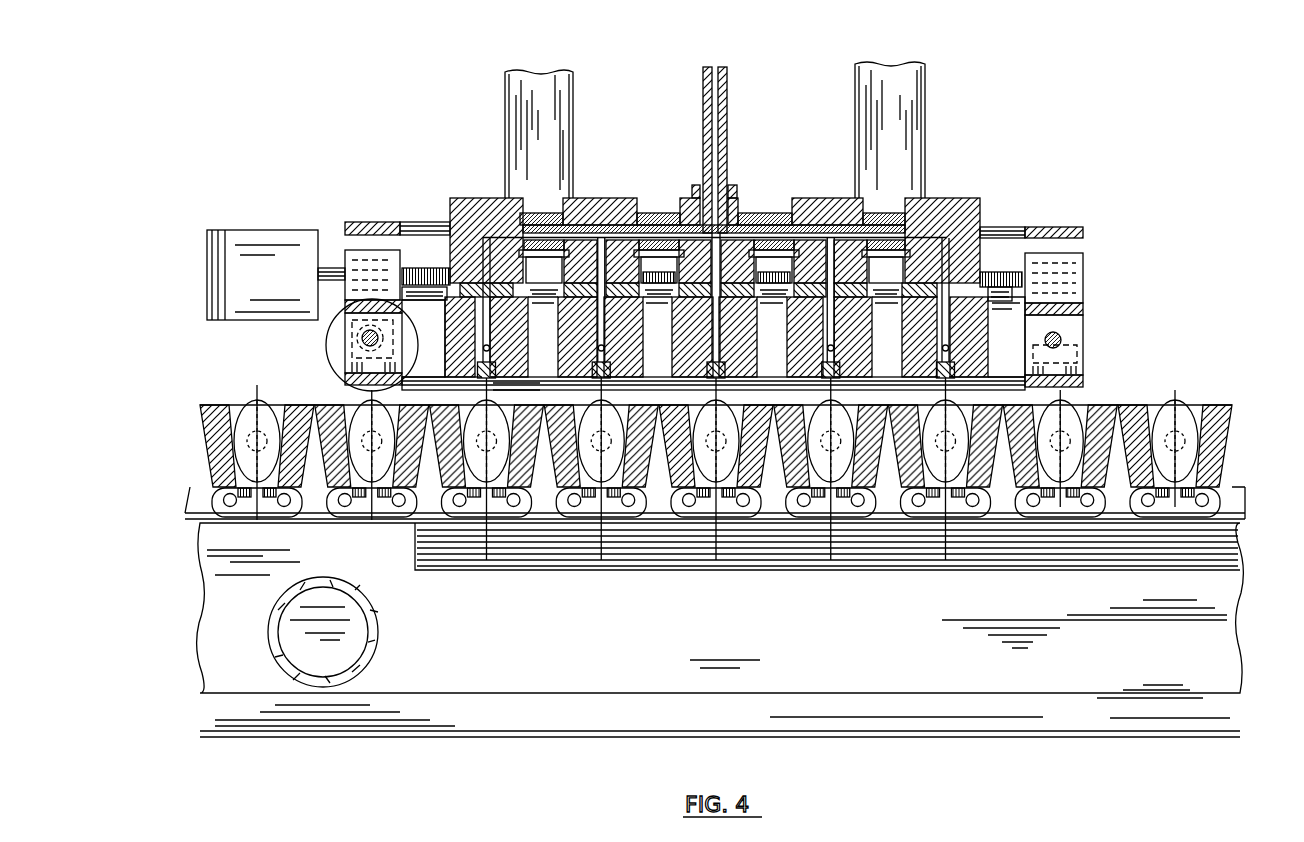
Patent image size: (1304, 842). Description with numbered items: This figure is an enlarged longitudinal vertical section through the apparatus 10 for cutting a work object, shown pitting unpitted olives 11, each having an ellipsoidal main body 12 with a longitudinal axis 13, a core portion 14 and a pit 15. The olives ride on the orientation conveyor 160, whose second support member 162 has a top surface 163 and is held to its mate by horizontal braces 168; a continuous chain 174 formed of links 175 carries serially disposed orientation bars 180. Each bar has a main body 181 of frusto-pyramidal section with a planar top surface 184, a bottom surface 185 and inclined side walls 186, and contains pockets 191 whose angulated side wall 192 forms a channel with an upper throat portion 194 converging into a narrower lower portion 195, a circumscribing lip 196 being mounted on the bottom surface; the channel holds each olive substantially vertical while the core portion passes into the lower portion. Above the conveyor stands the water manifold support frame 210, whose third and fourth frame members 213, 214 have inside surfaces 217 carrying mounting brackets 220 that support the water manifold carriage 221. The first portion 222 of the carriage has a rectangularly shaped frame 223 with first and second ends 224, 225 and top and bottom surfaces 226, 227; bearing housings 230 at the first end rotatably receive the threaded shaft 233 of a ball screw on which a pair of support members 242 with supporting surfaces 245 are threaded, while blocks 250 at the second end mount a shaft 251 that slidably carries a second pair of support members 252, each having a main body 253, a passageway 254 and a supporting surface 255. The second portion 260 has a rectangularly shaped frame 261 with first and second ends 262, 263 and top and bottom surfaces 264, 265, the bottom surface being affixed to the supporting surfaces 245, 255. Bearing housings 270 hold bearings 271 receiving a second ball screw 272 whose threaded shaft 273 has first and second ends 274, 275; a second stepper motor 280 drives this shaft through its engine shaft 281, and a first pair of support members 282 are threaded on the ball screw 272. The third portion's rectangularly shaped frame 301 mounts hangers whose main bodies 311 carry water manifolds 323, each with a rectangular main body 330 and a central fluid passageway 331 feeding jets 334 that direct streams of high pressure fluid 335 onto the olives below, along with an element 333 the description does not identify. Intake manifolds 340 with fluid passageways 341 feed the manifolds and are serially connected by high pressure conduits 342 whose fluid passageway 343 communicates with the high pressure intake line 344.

The apparatus for cutting a work object 10 is at (1084, 195).
The unpitted olive 11 is at (205, 456).
The main body 12 is at (272, 449).
The longitudinal axis 13 is at (256, 403).
The core portion 14 is at (520, 560).
The pit 15 is at (716, 503).
The orientation conveyor 160 is at (588, 535).
The second support member 162 is at (810, 649).
The top surface 163 is at (358, 520).
The braces 168 is at (368, 652).
The continuous chain 174 is at (775, 506).
The link 175 is at (400, 506).
The orientation bar 180 is at (680, 502).
The main body 181 is at (190, 486).
The top surface 184 is at (205, 404).
The bottom surface 185 is at (298, 506).
The inclined side walls 186 is at (205, 475).
The pocket 191 is at (236, 396).
The angulated side wall 192 is at (210, 444).
The throat portion 194 is at (716, 305).
The lower portion 195 is at (256, 505).
The circumscribing lip 196 is at (603, 502).
The water manifold support frame 210 is at (937, 122).
The third frame member 213 is at (925, 133).
The fourth frame member 214 is at (575, 132).
The inside surface 217 is at (520, 118).
The mounting bracket 220 is at (602, 389).
The water manifold carriage 221 is at (1092, 378).
The first portion 222 is at (430, 352).
The rectangularly shaped frame 223 is at (345, 378).
The first end 224 is at (350, 386).
The second end 225 is at (1060, 388).
The top surface 226 is at (590, 372).
The bottom surface 227 is at (657, 355).
The bearing housing 230 is at (358, 338).
The threaded shaft 233 is at (345, 360).
The support member 242 is at (352, 324).
The supporting surface 245 is at (438, 337).
The block 250 is at (1084, 350).
The shaft 251 is at (1027, 350).
The second pair of support members 252 is at (1062, 336).
The main body 253 is at (1078, 358).
The passageway 254 is at (1089, 318).
The supporting surface 255 is at (1027, 338).
The second portion 260 is at (1012, 285).
The rectangularly shaped frame 261 is at (442, 300).
The first end 262 is at (345, 262).
The second end 263 is at (1060, 320).
The top surface 264 is at (382, 266).
The bottom surface 265 is at (1000, 320).
The bearing housing 270 is at (375, 240).
The bearing 271 is at (378, 222).
The ball screw 272 is at (433, 268).
The threaded shaft 273 is at (650, 238).
The first end 274 is at (418, 268).
The second end 275 is at (1010, 291).
The second stepper motor 280 is at (284, 279).
The engine shaft 281 is at (335, 280).
The first pair of support members 282 is at (556, 284).
The rectangularly shaped frame 301 is at (990, 227).
The main body 311 is at (640, 300).
The water manifold 323 is at (527, 339).
The main body 330 is at (852, 308).
The fluid passageway 331 is at (712, 345).
The spring 333 is at (638, 337).
The jet 334 is at (810, 386).
The stream of high pressure fluid 335 is at (482, 391).
The intake manifold 340 is at (607, 210).
The fluid passageway 341 is at (642, 268).
The high pressure conduit 342 is at (540, 220).
The fluid passageway 343 is at (750, 220).
The high pressure intake line 344 is at (727, 80).